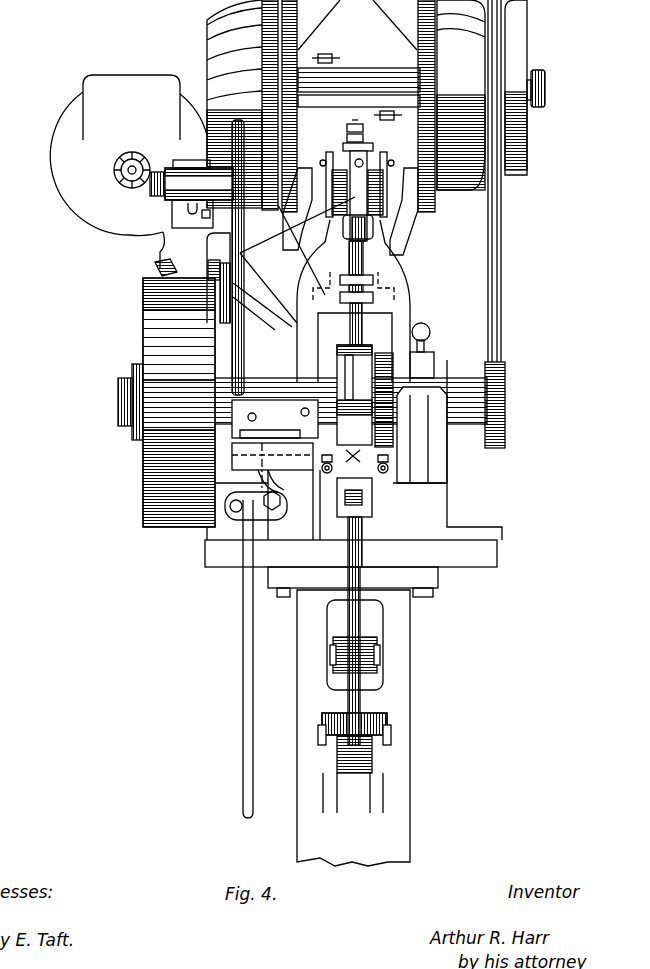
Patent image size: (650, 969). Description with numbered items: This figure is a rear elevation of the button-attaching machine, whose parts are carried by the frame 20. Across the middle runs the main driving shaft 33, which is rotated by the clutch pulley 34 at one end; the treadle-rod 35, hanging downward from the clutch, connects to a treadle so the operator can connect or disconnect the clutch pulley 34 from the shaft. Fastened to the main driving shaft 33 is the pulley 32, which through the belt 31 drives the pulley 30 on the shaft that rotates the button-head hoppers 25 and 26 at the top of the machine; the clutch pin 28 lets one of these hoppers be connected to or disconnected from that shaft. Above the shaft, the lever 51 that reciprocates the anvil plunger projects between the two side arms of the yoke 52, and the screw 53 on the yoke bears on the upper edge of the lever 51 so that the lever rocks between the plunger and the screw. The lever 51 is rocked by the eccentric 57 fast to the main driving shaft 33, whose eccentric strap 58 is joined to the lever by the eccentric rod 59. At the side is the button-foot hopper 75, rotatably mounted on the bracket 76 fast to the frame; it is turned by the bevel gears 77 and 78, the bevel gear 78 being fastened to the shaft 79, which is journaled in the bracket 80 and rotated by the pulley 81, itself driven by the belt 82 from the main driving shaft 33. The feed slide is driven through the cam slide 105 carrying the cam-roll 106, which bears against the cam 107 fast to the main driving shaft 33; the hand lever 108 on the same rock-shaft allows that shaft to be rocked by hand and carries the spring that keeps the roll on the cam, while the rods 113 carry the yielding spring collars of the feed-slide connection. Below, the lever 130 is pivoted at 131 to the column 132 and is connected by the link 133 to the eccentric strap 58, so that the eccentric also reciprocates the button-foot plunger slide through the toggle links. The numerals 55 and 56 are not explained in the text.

The frame 20 is at (404, 303).
The hopper 25 is at (462, 168).
The hopper 26 is at (210, 38).
The clutch pin 28 is at (547, 90).
The pulley 30 is at (502, 178).
The belt 31 is at (494, 280).
The pulley 32 is at (506, 430).
The main driving shaft 33 is at (118, 406).
The clutch pulley 34 is at (162, 485).
The treadle-rod 35 is at (243, 688).
The lever 51 is at (290, 255).
The yoke 52 is at (352, 150).
The screw 53 is at (360, 125).
The wedge 55 is at (406, 205).
The wedge 56 is at (300, 205).
The eccentric 57 is at (320, 450).
The eccentric strap 58 is at (275, 419).
The eccentric rod 59 is at (360, 262).
The hopper 75 is at (60, 183).
The bracket 76 is at (158, 268).
The bevel gear 77 is at (118, 180).
The bevel gear 78 is at (152, 192).
The shaft 79 is at (250, 196).
The bracket 80 is at (180, 210).
The pulley 81 is at (245, 242).
The belt 82 is at (234, 340).
The cam slide 105 is at (375, 372).
The cam-roll 106 is at (395, 418).
The cam 107 is at (393, 445).
The hand lever 108 is at (428, 332).
The rod 113 is at (322, 473).
The lever 130 is at (372, 672).
The pivot 131 is at (390, 738).
The column 132 is at (412, 796).
The link 133 is at (352, 620).